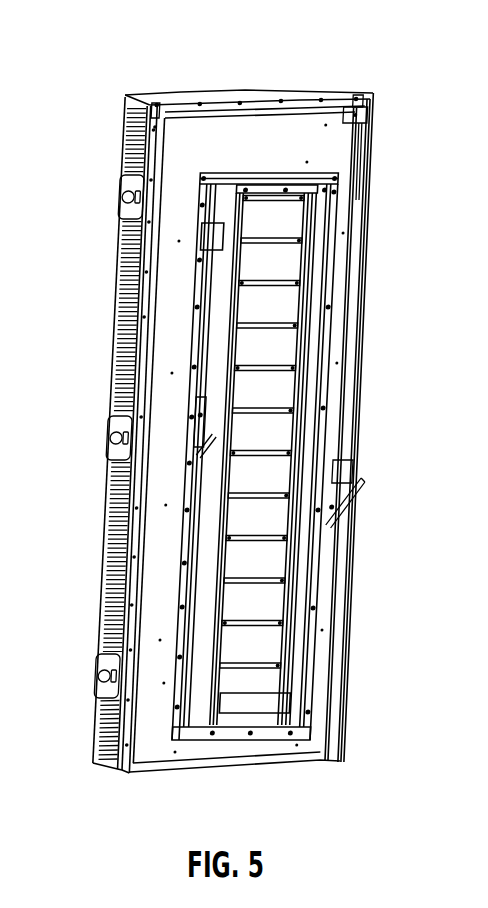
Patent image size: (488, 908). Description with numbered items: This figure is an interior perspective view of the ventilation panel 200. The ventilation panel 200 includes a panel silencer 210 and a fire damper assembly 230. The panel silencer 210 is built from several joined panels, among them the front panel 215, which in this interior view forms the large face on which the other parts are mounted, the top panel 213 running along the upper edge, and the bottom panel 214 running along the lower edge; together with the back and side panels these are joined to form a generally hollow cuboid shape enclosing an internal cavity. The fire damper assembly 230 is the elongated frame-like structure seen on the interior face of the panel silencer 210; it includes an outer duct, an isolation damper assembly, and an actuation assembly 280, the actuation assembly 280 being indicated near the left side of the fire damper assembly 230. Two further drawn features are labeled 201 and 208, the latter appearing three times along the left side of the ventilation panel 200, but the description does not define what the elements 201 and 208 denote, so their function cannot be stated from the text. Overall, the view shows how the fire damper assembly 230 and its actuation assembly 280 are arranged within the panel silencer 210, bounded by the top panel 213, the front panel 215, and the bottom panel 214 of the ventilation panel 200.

The ventilation panel 200 is at (225, 427).
The latch 201 is at (360, 482).
The connectors 208 is at (123, 200).
The panel silencer 210 is at (347, 90).
The top panel 213 is at (245, 93).
The bottom panel 214 is at (262, 770).
The front panel 215 is at (291, 112).
The fire damper assembly 230 is at (327, 277).
The actuation assembly 280 is at (197, 421).